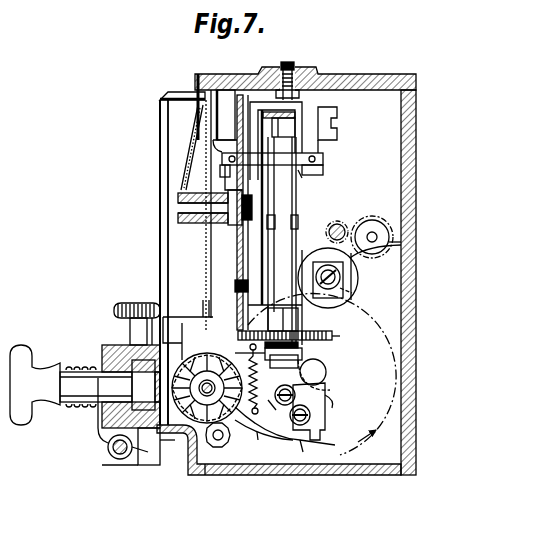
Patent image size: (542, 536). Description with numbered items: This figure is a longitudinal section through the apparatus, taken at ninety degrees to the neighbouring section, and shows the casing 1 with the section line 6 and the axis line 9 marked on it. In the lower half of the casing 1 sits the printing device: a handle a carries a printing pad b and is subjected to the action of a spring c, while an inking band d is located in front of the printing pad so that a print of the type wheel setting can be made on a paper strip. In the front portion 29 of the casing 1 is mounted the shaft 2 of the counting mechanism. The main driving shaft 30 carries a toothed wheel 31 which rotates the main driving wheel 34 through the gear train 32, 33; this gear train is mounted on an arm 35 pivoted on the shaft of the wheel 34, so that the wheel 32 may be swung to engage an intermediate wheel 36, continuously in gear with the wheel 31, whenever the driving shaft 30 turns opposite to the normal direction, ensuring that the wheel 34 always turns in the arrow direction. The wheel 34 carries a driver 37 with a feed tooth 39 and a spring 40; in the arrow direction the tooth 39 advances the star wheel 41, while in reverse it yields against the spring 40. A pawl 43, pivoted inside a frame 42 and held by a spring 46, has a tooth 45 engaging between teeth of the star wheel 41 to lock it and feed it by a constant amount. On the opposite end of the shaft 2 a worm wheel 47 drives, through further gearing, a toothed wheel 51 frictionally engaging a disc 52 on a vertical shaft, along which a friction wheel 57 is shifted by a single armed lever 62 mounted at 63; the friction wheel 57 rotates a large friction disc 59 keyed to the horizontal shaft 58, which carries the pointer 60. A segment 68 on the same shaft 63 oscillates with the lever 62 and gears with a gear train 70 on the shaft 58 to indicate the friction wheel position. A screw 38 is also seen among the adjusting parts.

The casing 1 is at (392, 475).
The shaft 2 is at (150, 472).
The section line 6 is at (322, 46).
The axis line 9 is at (416, 336).
The front portion 29 is at (207, 475).
The main driving shaft 30 is at (346, 224).
The toothed wheel 31 is at (338, 221).
The gear train wheel 32 is at (358, 275).
The gear train wheel 33 is at (352, 293).
The main driving wheel 34 is at (366, 306).
The arm 35 is at (330, 363).
The intermediate wheel 36 is at (401, 242).
The driver 37 is at (298, 425).
The screw 38 is at (310, 418).
The feed tooth 39 is at (304, 446).
The spring 40 is at (322, 404).
The star wheel 41 is at (198, 362).
The frame 42 is at (285, 386).
The pawl 43 is at (260, 446).
The tooth 45 is at (229, 437).
The spring 46 is at (264, 383).
The worm wheel 47 is at (279, 420).
The toothed wheel 51 is at (340, 336).
The disc 52 is at (283, 338).
The friction wheel 57 is at (300, 110).
The horizontal shaft 58 is at (272, 207).
The friction disc 59 is at (240, 249).
The pointer 60 is at (196, 141).
The single armed lever 62 is at (306, 151).
The shaft 63 is at (311, 183).
The segment 68 is at (225, 179).
The gear train 70 is at (227, 210).
The handle a is at (22, 408).
The printing pad b is at (95, 430).
The spring c is at (73, 363).
The inking band d is at (124, 460).